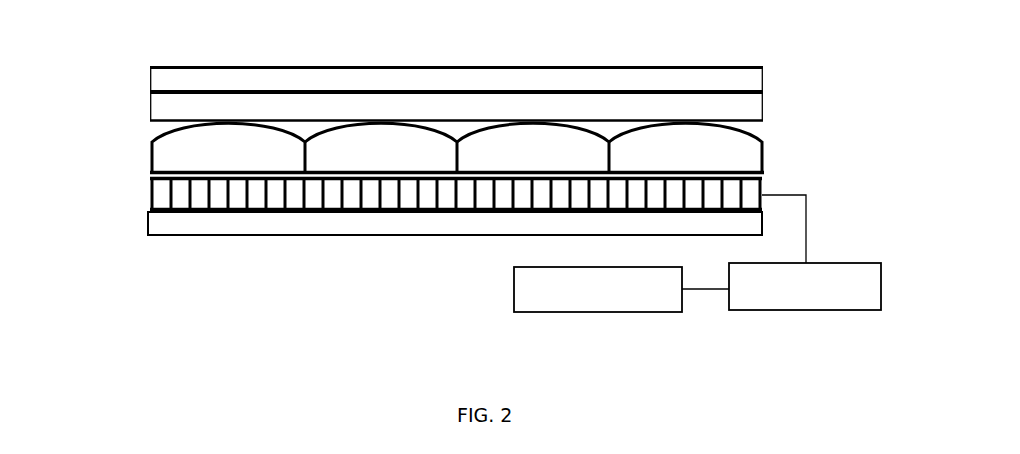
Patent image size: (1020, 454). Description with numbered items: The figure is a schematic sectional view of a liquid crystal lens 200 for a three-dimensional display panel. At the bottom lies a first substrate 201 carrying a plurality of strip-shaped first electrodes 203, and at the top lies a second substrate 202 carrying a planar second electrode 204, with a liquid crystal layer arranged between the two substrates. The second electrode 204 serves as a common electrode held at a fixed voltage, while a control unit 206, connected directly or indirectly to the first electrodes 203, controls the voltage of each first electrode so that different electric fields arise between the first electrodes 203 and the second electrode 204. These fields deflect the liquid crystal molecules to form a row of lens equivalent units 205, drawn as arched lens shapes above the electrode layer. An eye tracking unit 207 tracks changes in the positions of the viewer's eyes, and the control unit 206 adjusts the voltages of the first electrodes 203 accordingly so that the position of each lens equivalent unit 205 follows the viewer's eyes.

The liquid crystal lens 200 is at (157, 49).
The first substrate 201 is at (148, 225).
The second substrate 202 is at (150, 80).
The first electrodes 203 is at (150, 190).
The second electrode 204 is at (150, 102).
The lens equivalent units 205 is at (150, 152).
The control unit 206 is at (815, 310).
The eye tracking unit 207 is at (611, 312).